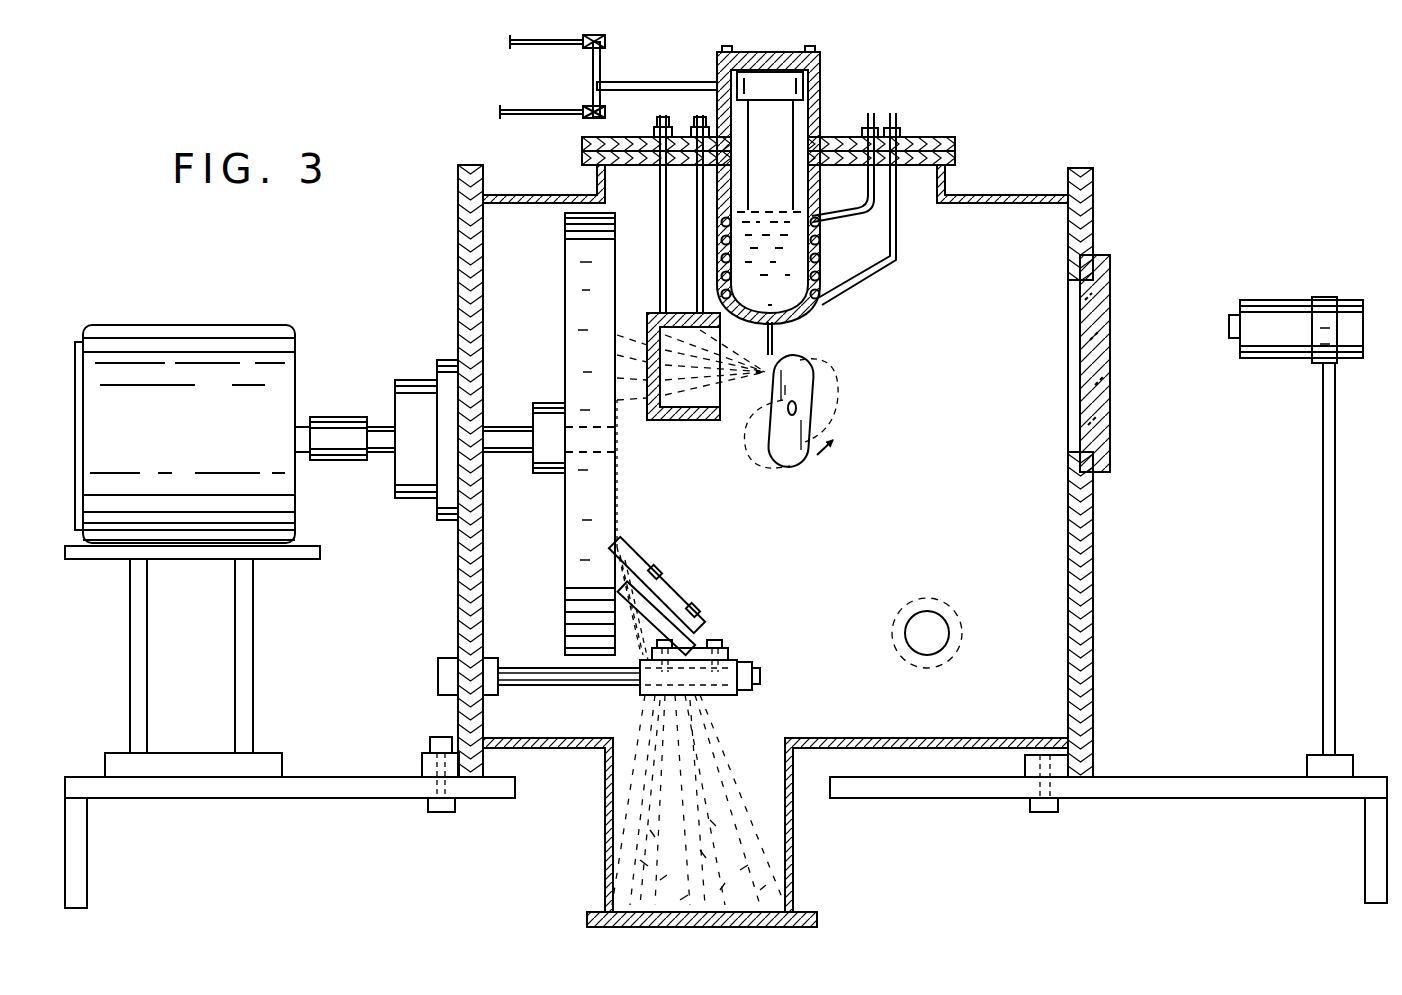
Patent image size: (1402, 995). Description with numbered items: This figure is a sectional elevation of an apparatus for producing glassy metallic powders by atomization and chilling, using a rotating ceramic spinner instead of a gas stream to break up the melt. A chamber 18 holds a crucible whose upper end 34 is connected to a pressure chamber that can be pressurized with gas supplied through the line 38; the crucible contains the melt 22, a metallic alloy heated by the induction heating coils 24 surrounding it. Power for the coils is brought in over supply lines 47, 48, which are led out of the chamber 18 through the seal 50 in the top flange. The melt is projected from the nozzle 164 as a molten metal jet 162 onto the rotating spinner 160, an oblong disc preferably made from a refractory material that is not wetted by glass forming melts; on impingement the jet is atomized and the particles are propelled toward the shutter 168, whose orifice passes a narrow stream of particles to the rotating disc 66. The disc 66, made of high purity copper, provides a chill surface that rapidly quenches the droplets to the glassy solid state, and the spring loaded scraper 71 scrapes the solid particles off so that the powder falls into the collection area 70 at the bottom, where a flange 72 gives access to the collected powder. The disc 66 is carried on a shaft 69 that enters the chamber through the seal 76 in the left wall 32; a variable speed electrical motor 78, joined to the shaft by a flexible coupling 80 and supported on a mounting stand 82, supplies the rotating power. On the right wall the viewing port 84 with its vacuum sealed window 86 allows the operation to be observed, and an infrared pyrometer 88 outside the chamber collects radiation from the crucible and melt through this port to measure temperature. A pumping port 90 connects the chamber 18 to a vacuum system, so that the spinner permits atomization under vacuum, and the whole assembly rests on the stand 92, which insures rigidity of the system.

The chamber 18 is at (986, 277).
The melt 22 is at (789, 298).
The induction heating coils 24 is at (838, 238).
The chamber wall 32 is at (1097, 600).
The upper end of the crucible 34 is at (790, 138).
The line 38 is at (654, 82).
The gas inlet tube 47 is at (872, 113).
The supply line 48 is at (896, 113).
The seal 50 is at (905, 137).
The rotating disc 66 is at (578, 322).
The shaft 69 is at (507, 433).
The collection area 70 is at (768, 823).
The spring loaded scraper 71 is at (640, 562).
The flange 72 is at (798, 925).
The seal 76 is at (408, 472).
The variable speed electrical motor 78 is at (270, 355).
The flexible coupling 80 is at (335, 415).
The mounting stand 82 is at (285, 556).
The viewing port 84 is at (1074, 327).
The vacuum sealed window 86 is at (1098, 413).
The infrared pyrometer 88 is at (1268, 342).
The pumping port 90 is at (932, 645).
The stand 92 is at (1177, 788).
The rotating spinner 160 is at (802, 426).
The molten metal jet 162 is at (789, 346).
The nozzle 164 is at (800, 325).
The shutter 168 is at (653, 422).